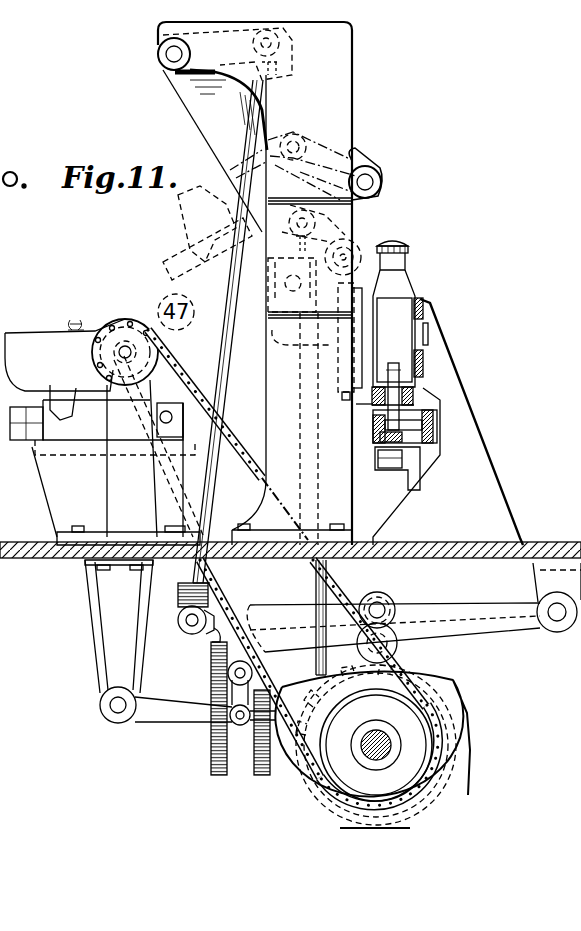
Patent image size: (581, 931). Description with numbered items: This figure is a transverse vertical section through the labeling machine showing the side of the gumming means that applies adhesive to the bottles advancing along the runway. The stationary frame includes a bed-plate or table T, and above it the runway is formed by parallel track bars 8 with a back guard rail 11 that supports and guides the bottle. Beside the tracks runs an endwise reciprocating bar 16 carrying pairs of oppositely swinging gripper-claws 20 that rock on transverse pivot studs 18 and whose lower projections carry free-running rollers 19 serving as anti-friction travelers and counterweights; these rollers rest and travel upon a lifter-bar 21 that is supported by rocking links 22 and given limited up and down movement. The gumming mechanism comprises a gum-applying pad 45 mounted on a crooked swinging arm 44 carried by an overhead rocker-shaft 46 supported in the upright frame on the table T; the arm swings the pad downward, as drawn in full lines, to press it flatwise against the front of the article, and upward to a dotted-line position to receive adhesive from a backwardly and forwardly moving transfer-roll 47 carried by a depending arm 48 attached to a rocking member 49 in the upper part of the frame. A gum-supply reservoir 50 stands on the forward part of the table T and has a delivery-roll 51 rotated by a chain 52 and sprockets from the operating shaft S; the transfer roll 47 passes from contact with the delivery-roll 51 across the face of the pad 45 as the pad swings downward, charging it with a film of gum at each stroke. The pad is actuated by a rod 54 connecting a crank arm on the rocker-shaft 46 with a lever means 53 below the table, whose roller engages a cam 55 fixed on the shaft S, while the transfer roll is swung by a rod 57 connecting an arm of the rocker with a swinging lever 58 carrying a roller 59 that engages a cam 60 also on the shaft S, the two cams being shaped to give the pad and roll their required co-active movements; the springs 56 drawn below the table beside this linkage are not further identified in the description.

The bed-plate or table T is at (19, 545).
The rocking member 49 is at (166, 56).
The depending arm 48 is at (220, 122).
The rocker-shaft 46 is at (382, 182).
The transfer-roll 47 is at (364, 262).
The swinging arm 44 is at (282, 345).
The gum-applying pad 45 is at (358, 340).
The back guard rail 11 is at (422, 310).
The gripper-claw 20 is at (397, 370).
The track bar 8 is at (410, 392).
The pivot stud 18 is at (400, 408).
The reciprocating bar 16 is at (423, 420).
The roller 19 is at (436, 430).
The lifter-bar 21 is at (404, 438).
The rocking link 22 is at (412, 463).
The gum-supply reservoir 50 is at (65, 369).
The delivery-roll 51 is at (121, 319).
The chain 52 is at (240, 437).
The rod 57 is at (212, 497).
The swinging lever 58 is at (287, 623).
The spring 56 is at (211, 750).
The rod 54 is at (318, 584).
The lever means 53 is at (190, 712).
The roller 59 is at (384, 602).
The operating shaft S is at (392, 745).
The cam 55 is at (458, 776).
The cam 60 is at (440, 672).